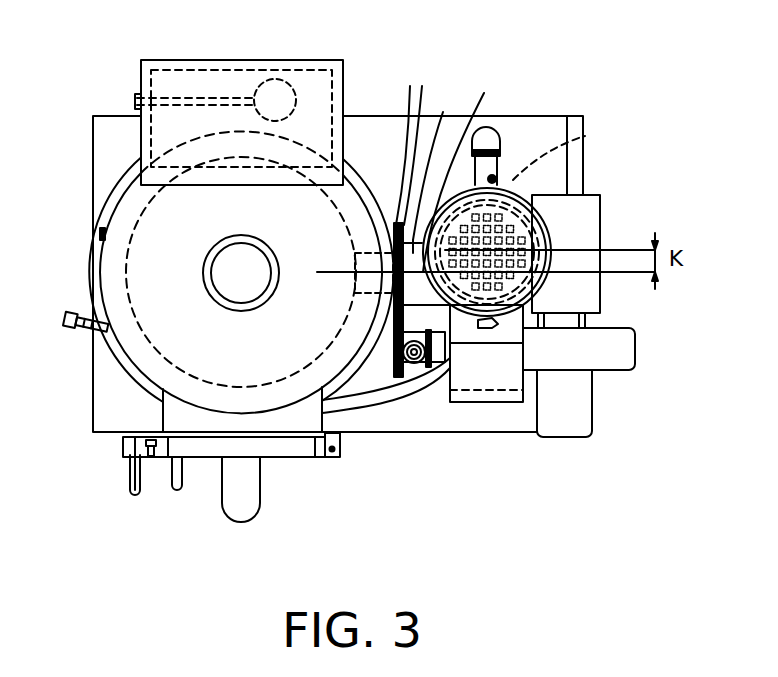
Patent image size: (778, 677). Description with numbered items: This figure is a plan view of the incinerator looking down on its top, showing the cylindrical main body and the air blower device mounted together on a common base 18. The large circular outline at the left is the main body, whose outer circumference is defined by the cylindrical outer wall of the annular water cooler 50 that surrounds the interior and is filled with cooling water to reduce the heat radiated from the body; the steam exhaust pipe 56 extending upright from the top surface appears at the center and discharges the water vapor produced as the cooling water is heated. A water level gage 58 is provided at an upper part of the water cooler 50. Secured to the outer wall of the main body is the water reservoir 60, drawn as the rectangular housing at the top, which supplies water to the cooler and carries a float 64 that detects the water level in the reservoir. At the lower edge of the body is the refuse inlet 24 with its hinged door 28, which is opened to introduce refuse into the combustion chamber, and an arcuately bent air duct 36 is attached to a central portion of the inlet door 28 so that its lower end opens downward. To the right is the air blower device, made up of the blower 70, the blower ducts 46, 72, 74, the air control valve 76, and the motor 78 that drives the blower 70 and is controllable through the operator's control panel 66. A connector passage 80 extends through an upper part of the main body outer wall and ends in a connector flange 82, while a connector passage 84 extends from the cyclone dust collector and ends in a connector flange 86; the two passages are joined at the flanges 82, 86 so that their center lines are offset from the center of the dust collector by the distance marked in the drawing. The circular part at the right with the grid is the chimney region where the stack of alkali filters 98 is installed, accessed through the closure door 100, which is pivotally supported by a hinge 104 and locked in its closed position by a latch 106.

The base 18 is at (368, 125).
The refuse inlet 24 is at (168, 428).
The hinged door 28 is at (200, 448).
The air duct 36 is at (250, 498).
The blower duct 46 is at (357, 402).
The annular water cooler 50 is at (110, 284).
The steam exhaust pipe 56 is at (203, 268).
The water level gage 58 is at (78, 332).
The water reservoir 60 is at (323, 58).
The float 64 is at (284, 80).
The operator's control panel 66 is at (480, 373).
The blower 70 is at (613, 343).
The blower duct 72 is at (500, 142).
The blower duct 74 is at (383, 403).
The air control valve 76 is at (413, 373).
The motor 78 is at (590, 217).
The connector passage 80 is at (379, 252).
The connector flange 82 is at (418, 140).
The connector passage 84 is at (464, 167).
The connector flange 86 is at (442, 162).
The stack of alkali filters 98 is at (576, 145).
The closure door 100 is at (555, 193).
The hinge 104 is at (497, 176).
The latch 106 is at (495, 328).